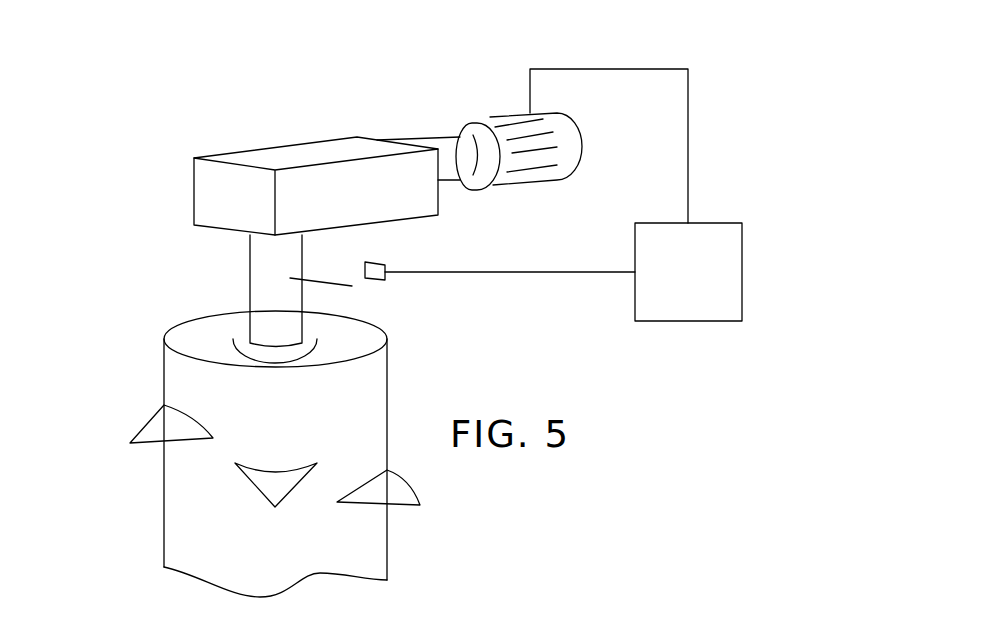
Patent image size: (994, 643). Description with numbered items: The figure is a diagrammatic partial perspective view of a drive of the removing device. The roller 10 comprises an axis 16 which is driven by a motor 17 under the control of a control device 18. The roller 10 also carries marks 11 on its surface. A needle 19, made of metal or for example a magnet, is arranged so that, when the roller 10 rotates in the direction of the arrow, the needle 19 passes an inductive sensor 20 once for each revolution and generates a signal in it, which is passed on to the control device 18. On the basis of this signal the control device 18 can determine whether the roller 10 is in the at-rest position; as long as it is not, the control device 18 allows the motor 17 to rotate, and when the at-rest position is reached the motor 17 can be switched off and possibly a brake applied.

The roller 10 is at (180, 380).
The reference marks 11 is at (152, 433).
The axis 16 is at (260, 288).
The motor 17 is at (440, 123).
The control device 18 is at (703, 278).
The needle 19 is at (387, 282).
The inductive sensor 20 is at (332, 283).